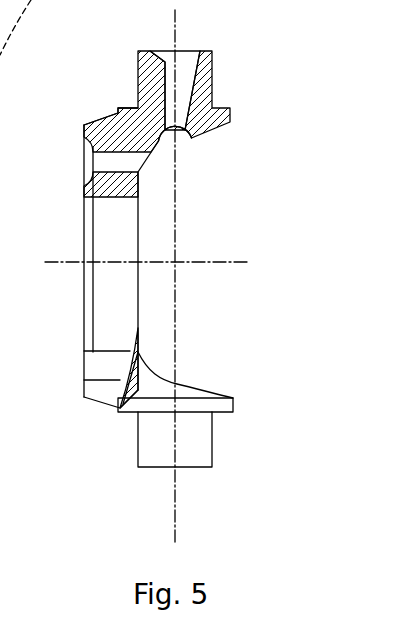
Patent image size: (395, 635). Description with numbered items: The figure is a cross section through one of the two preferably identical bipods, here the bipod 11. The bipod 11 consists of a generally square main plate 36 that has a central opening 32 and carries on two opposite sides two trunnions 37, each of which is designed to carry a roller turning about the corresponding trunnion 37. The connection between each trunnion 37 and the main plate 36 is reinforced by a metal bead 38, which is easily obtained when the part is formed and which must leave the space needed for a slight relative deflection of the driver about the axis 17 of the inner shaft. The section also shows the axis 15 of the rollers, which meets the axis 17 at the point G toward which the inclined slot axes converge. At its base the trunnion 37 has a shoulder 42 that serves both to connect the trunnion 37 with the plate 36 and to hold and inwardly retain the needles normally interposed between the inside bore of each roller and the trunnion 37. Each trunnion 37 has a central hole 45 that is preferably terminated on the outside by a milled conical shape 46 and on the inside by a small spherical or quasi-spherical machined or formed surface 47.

The bipod 11 is at (138, 265).
The axis of the rollers 15 is at (176, 290).
The axis of the inner shaft 17 is at (225, 260).
The central opening 32 is at (98, 198).
The main plate 36 is at (83, 365).
The trunnion 37 is at (138, 442).
The metal bead 38 is at (97, 122).
The shoulder 42 is at (234, 403).
The central hole 45 is at (170, 94).
The milled conical shape 46 is at (152, 52).
The spherical or quasi-spherical surface 47 is at (160, 142).